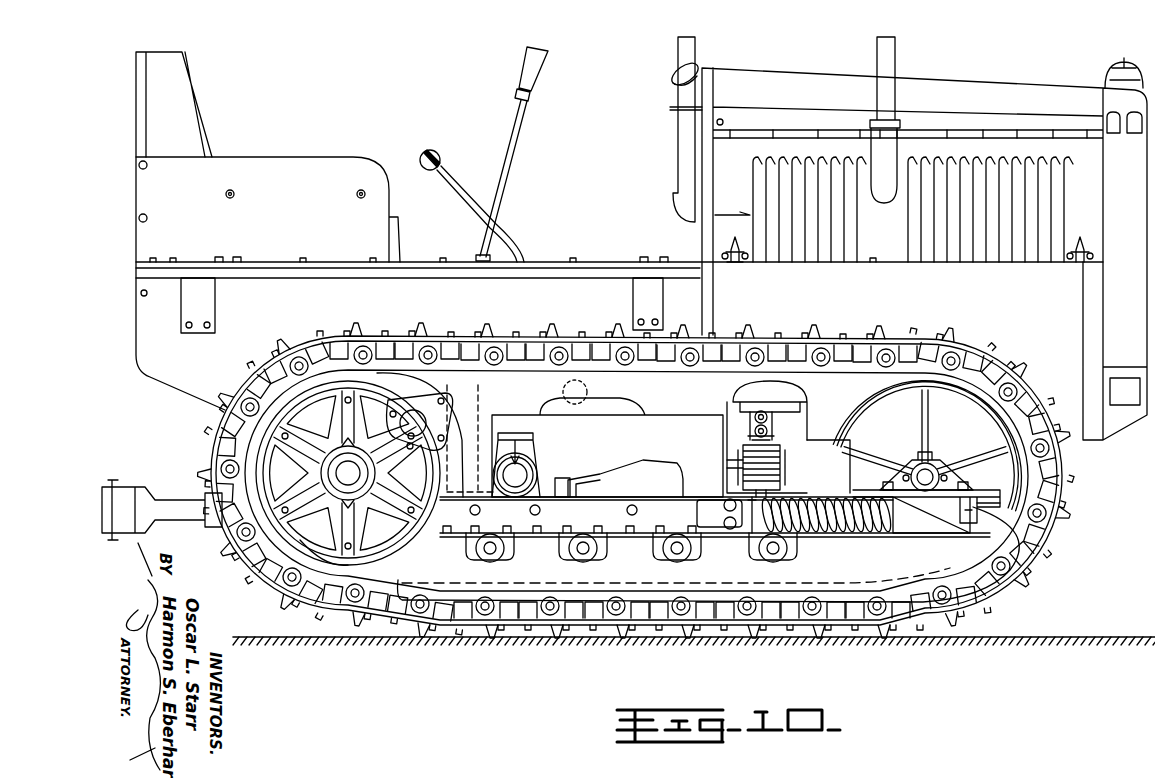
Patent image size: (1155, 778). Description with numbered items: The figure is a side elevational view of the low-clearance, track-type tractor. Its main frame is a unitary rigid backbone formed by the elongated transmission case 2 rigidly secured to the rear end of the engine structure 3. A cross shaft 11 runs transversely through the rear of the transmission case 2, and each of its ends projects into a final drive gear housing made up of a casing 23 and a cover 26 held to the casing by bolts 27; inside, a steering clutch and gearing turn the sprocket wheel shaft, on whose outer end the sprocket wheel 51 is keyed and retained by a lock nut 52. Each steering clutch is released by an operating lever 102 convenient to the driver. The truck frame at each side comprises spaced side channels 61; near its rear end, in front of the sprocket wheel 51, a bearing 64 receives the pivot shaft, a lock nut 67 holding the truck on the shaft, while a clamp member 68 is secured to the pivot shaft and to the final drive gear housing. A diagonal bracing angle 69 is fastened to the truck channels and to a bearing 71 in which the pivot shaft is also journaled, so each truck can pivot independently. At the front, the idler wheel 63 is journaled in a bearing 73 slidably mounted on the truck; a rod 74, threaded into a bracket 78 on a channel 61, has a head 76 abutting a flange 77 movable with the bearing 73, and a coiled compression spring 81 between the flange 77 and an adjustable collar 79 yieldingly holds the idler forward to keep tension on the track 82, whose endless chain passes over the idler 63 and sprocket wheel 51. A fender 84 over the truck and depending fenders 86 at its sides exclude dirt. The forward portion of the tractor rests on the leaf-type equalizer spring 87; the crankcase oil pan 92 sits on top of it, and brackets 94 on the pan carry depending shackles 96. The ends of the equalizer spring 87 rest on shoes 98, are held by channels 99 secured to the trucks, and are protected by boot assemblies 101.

The operating lever 102 is at (508, 157).
The cover 26 is at (330, 428).
The casing 23 is at (423, 390).
The bolts 27 is at (296, 450).
The lock nut 52 is at (368, 469).
The sprocket wheel 51 is at (352, 548).
The cross shaft 11 is at (466, 381).
The clamp member 68 is at (490, 433).
The bearing 64 is at (523, 463).
The lock nut 67 is at (548, 487).
The angle 69 is at (612, 482).
The bearing 71 is at (580, 477).
The transmission case 2 is at (575, 392).
The fender 84 is at (622, 425).
The engine structure 3 is at (731, 440).
The brackets 94 is at (767, 418).
The shackles 96 is at (755, 419).
The crankcase oil pan 92 is at (757, 432).
The boot assemblies 101 is at (772, 440).
The channels 99 is at (778, 470).
The shoes 98 is at (770, 487).
The equalizer spring 87 is at (757, 470).
The side channels 61 is at (598, 525).
The collar 79 is at (768, 561).
The bracket 78 is at (708, 530).
The rod 74 is at (716, 522).
The coiled compression spring 81 is at (838, 530).
The flange 77 is at (1000, 505).
The head 76 is at (985, 510).
The depending fenders 86 is at (553, 580).
The front idler wheel 63 is at (888, 387).
The bearing 73 is at (930, 470).
The track 82 is at (1020, 579).